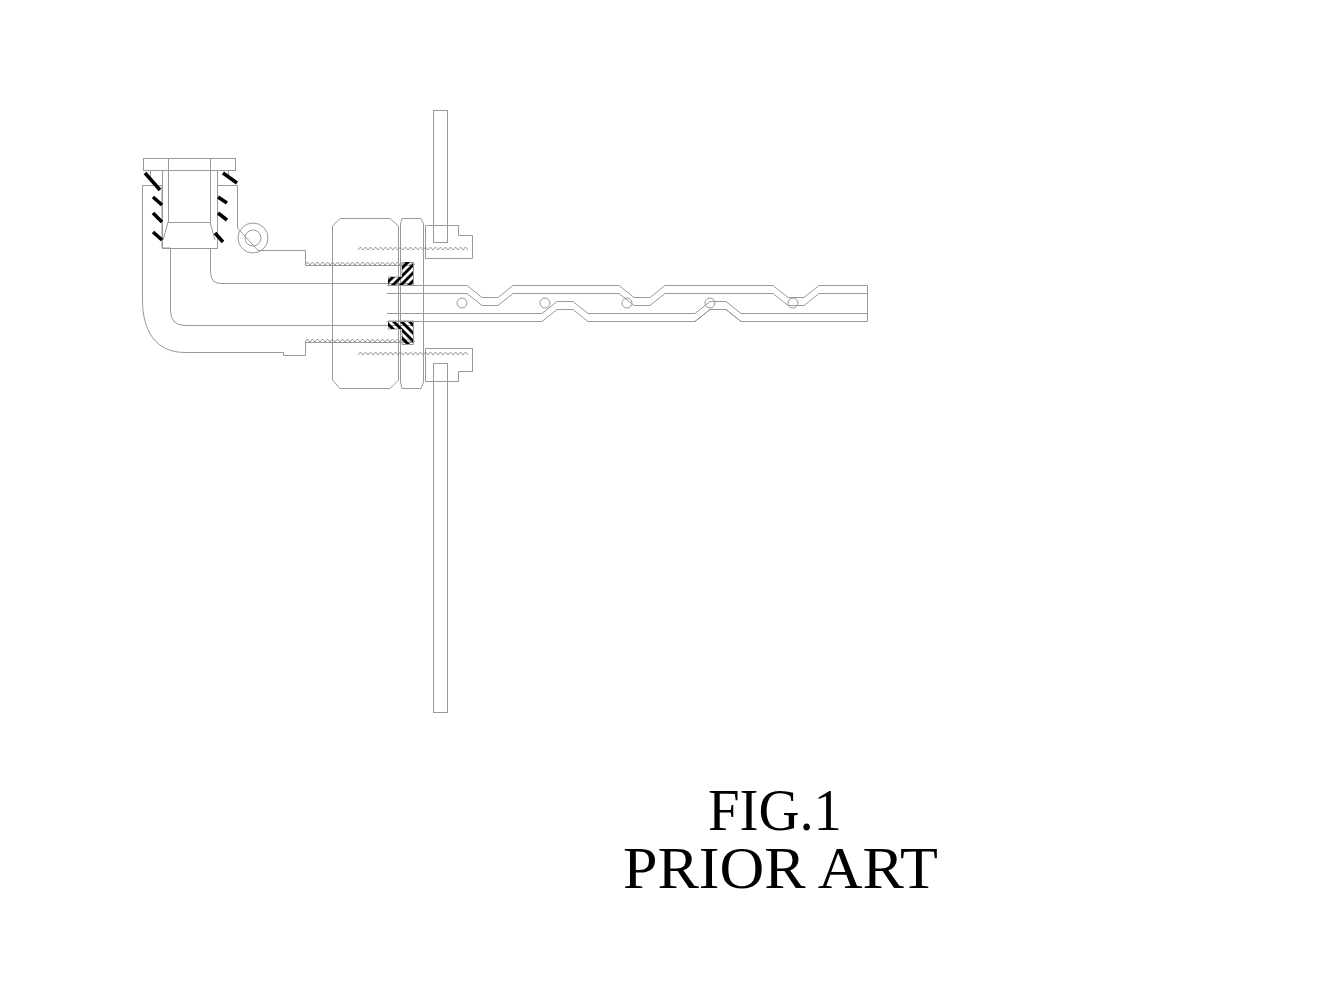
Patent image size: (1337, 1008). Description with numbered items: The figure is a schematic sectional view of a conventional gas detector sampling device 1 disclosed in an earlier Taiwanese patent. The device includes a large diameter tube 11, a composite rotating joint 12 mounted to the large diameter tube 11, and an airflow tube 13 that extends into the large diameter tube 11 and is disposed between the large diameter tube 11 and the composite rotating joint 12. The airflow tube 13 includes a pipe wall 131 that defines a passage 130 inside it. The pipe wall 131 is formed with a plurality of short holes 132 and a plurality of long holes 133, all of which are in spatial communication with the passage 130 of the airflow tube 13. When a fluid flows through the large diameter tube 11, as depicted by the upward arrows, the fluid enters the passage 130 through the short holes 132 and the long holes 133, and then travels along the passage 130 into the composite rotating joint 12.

The gas detector sampling device 1 is at (404, 110).
The large diameter tube 11 is at (443, 560).
The composite rotating joint 12 is at (205, 340).
The airflow tube 13 is at (566, 288).
The passage 130 is at (763, 300).
The pipe wall 131 is at (725, 290).
The short holes 132 is at (544, 298).
The long holes 133 is at (705, 305).